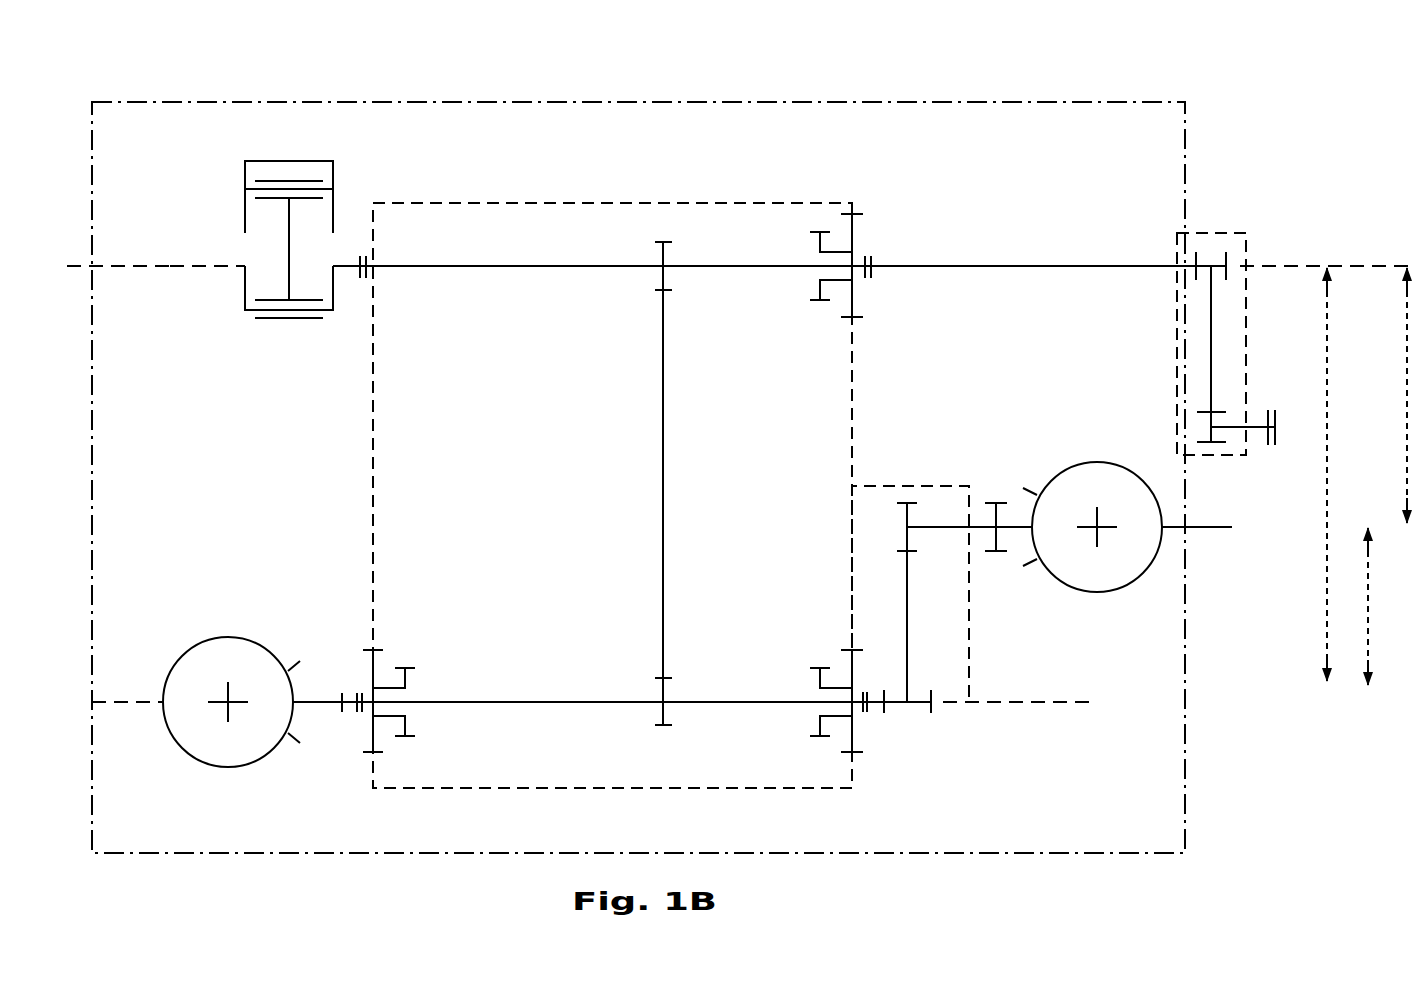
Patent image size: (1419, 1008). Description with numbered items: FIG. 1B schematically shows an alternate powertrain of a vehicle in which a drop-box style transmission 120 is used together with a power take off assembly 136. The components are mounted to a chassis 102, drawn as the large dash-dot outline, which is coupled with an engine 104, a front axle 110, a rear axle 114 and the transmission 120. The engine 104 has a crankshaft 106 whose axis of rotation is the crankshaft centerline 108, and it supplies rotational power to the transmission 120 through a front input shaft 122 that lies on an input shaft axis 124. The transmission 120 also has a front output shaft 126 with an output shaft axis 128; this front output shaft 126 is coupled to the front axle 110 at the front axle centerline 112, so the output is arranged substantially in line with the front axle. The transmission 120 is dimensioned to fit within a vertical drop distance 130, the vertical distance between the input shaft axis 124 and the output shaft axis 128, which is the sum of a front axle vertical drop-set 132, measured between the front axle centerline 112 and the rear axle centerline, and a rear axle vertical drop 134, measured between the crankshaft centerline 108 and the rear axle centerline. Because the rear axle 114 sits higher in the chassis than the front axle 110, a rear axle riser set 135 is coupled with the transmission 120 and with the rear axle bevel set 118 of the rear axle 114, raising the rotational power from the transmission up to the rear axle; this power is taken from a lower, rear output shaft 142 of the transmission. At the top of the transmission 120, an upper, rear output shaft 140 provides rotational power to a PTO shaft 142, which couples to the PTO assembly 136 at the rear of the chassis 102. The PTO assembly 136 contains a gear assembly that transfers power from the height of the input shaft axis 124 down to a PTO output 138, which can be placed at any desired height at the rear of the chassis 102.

The chassis 102 is at (782, 97).
The engine 104 is at (342, 166).
The crankshaft 106 is at (222, 260).
The crankshaft centerline 108 is at (122, 258).
The front axle 110 is at (265, 636).
The front axle centerline 112 is at (1215, 533).
The rear axle 114 is at (1100, 460).
The rear axle bevel set 118 is at (998, 500).
The transmission 120 is at (752, 198).
The front input shaft 122 is at (478, 262).
The input shaft axis 124 is at (1306, 262).
The front output shaft 126 is at (482, 695).
The output shaft axis 128 is at (1070, 697).
The vertical drop distance 130 is at (1333, 441).
The front axle vertical drop-set 132 is at (1360, 702).
The rear axle vertical drop 134 is at (1402, 357).
The rear axle riser set 135 is at (931, 483).
The PTO assembly 136 is at (1243, 228).
The PTO output 138 is at (1271, 453).
The upper, rear output shaft 140 is at (790, 272).
The PTO shaft 142 is at (1089, 264).